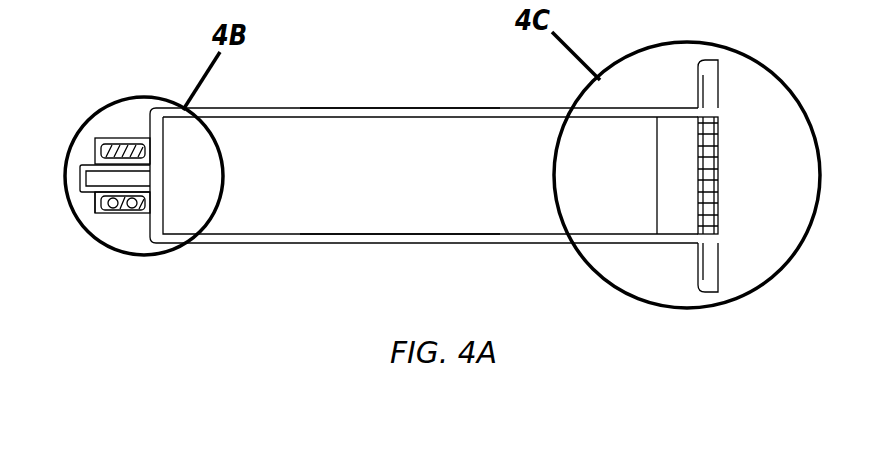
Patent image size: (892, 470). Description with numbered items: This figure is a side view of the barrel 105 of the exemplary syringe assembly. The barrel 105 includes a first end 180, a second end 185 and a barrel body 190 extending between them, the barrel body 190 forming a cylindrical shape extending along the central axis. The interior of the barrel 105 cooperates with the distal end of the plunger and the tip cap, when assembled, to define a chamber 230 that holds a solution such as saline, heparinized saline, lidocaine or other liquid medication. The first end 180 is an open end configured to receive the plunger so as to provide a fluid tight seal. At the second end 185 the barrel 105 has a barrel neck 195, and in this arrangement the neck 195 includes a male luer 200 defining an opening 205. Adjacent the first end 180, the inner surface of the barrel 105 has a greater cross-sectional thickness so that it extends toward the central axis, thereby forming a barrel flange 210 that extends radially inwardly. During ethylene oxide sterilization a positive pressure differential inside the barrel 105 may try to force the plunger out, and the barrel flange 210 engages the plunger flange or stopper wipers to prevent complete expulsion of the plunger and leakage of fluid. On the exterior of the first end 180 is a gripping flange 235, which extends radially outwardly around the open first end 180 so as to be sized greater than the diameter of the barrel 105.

The barrel 105 is at (283, 102).
The barrel body 190 is at (355, 104).
The chamber 230 is at (330, 218).
The barrel flange 210 is at (693, 108).
The first end 180 is at (722, 178).
The gripping flange 235 is at (710, 292).
The opening 205 is at (77, 180).
The second end 185 is at (112, 130).
The barrel neck 195 is at (130, 213).
The male luer 200 is at (92, 212).